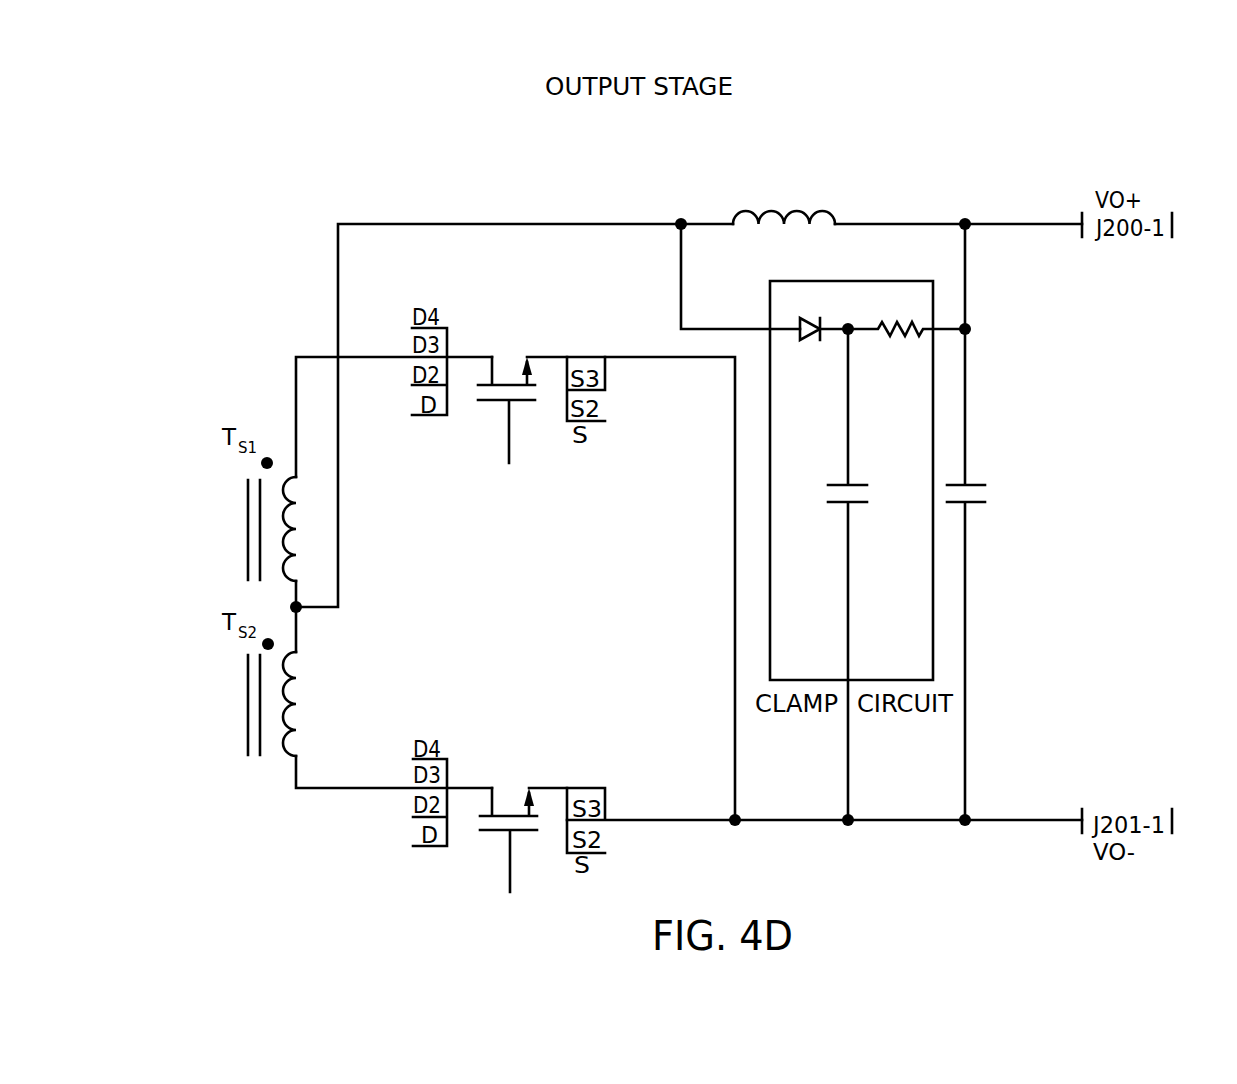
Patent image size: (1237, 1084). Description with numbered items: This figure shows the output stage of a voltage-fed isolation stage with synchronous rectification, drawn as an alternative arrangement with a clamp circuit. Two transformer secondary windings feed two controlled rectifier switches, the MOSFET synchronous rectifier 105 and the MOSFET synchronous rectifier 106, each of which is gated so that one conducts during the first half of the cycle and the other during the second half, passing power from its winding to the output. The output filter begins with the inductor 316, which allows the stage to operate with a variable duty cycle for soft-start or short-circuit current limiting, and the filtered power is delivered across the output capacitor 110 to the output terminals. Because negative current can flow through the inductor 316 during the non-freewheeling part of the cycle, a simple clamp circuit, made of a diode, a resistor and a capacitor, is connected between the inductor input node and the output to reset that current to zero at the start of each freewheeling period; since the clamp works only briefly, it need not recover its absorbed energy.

The MOSFET synchronous rectifier 105 is at (504, 408).
The MOSFET synchronous rectifier 106 is at (507, 837).
The inductor 316 is at (784, 190).
The capacitor 110 is at (988, 522).